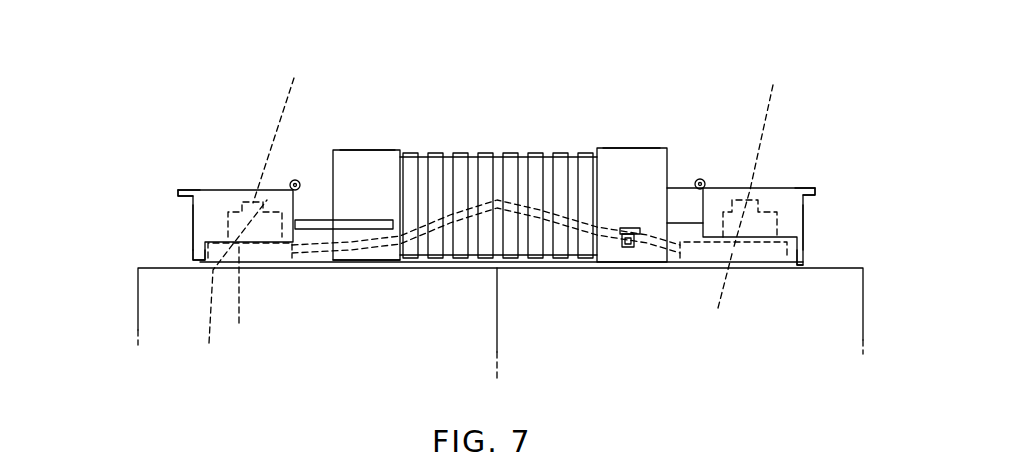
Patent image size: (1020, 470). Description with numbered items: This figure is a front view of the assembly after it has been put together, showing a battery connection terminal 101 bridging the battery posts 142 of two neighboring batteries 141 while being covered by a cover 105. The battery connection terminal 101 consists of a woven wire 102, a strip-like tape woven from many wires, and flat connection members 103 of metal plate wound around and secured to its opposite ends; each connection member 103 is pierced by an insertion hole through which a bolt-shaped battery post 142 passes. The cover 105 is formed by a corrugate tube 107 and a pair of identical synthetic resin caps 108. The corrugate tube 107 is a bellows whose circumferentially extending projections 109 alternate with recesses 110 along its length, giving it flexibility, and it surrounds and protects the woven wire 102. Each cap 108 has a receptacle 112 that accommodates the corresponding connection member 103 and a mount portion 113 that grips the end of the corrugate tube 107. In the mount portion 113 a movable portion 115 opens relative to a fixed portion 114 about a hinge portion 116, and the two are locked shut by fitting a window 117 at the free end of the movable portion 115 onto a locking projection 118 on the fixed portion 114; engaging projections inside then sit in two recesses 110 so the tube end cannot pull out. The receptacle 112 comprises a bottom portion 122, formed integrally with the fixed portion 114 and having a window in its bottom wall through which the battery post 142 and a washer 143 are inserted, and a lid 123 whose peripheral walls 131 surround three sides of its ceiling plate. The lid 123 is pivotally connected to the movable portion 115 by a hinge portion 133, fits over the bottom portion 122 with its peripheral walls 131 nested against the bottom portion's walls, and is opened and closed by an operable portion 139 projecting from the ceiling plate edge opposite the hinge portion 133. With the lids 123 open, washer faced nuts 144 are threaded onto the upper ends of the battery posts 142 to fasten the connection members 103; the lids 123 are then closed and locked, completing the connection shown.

The battery connection terminal 101 is at (507, 188).
The woven wire 102 is at (525, 270).
The connection member 103 is at (480, 300).
The cover 105 is at (498, 145).
The corrugate tube 107 is at (473, 148).
The cap 108 is at (494, 207).
The projection 109 is at (498, 145).
The recess 110 is at (525, 147).
The receptacle 112 is at (258, 180).
The mount portion 113 is at (507, 208).
The fixed portion 114 is at (393, 270).
The movable portion 115 is at (383, 167).
The hinge portion 116 is at (340, 263).
The window 117 is at (622, 247).
The locking projection 118 is at (634, 247).
The bottom portion 122 is at (197, 258).
The lid 123 is at (193, 207).
The peripheral wall 131 is at (205, 228).
The hinge portion 133 is at (295, 179).
The operable portion 139 is at (182, 190).
The battery 141 is at (153, 313).
The battery post 142 is at (523, 148).
The washer 143 is at (263, 270).
The washer faced nut 144 is at (833, 250).